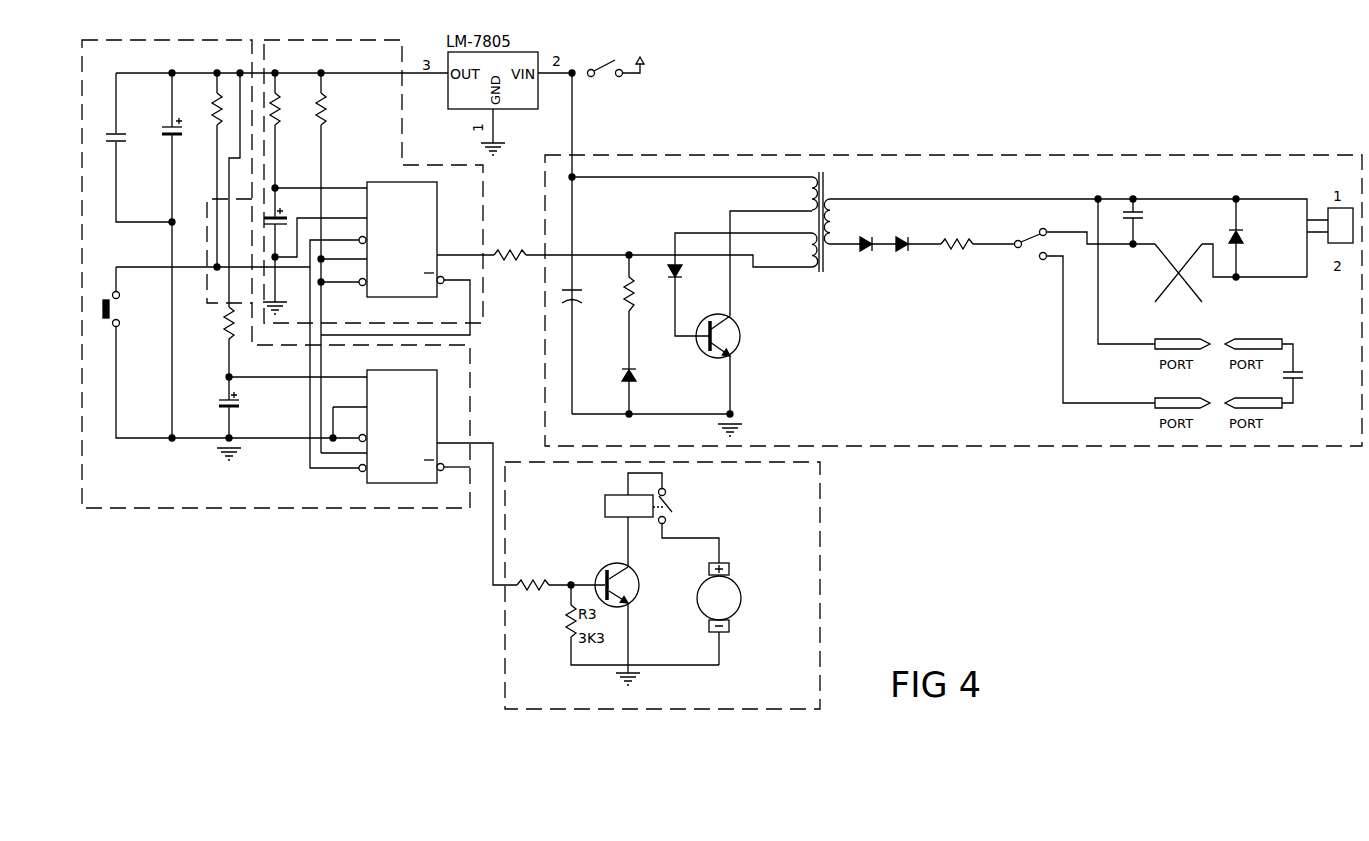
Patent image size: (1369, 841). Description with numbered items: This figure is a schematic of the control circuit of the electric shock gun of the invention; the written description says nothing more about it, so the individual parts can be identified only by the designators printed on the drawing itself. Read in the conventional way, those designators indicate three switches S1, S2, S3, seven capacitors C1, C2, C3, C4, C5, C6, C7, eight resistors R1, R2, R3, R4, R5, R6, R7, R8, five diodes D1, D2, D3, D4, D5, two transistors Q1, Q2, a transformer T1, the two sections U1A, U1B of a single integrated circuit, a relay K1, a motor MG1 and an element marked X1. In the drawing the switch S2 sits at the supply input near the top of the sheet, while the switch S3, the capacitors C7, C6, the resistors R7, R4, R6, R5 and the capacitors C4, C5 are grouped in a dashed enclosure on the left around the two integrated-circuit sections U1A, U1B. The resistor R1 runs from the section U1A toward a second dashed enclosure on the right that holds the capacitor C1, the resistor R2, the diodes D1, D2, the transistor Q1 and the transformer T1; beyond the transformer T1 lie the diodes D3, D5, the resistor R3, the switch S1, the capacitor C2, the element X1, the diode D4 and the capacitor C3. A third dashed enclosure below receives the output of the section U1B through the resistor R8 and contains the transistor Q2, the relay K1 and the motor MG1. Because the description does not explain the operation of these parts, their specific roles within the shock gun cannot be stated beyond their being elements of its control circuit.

The power switch S2 is at (618, 60).
The capacitor C7 0.1UF C7 is at (133, 148).
The capacitor C6 100UF C6 is at (186, 136).
The resistor R7 10K R7 is at (228, 123).
The resistor R4 68K R4 is at (288, 116).
The resistor R6 10K R6 is at (334, 116).
The capacitor C4 10UF C4 is at (258, 227).
The monostable multivibrator U1A 74LS123 U1A is at (393, 241).
The push button switch S3 is at (122, 297).
The resistor R5 is at (211, 331).
The capacitor C5 10UF C5 is at (245, 406).
The monostable multivibrator U1B 74LS123 U1B is at (393, 427).
The resistor R1 1K R1 is at (510, 255).
The capacitor C1 200uf C1 is at (590, 310).
The resistor R2 4.7 R2 is at (641, 296).
The diode D1 IN4007 D1 is at (656, 385).
The diode D2 IN4007 D2 is at (695, 283).
The transistor Q1 D2061 Q1 is at (744, 339).
The transformer T1 is at (822, 225).
The diode D3 R3000F D3 is at (878, 245).
The diode D5 is at (904, 232).
The resistor R3 560 1/2W R3 is at (970, 247).
The switch S1 SW-SPDT S1 is at (1009, 231).
The capacitor C2 0.2UF C2 is at (1131, 188).
The spark gap / electrode X1 is at (1178, 271).
The diode D4 R3000F D4 is at (1260, 252).
The capacitor C3 0.2UF C3 is at (1314, 374).
The resistor R8 3K3 R8 is at (533, 588).
The transistor Q2 8050 Q2 is at (635, 562).
The relay K1 is at (649, 506).
The servo motor MG1 is at (745, 597).